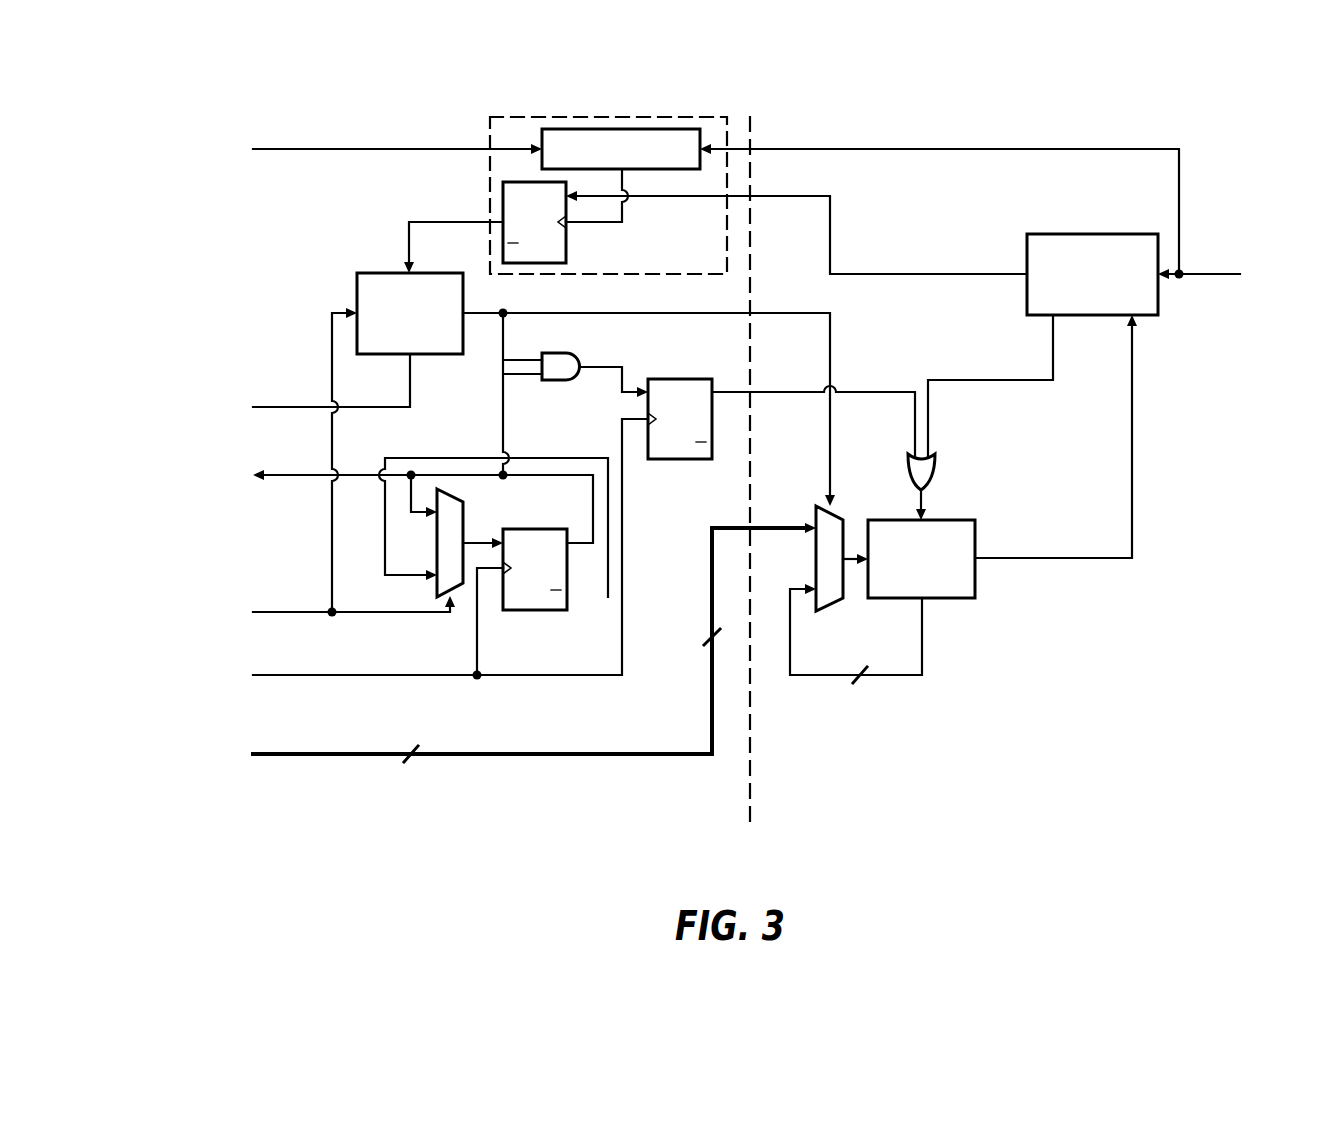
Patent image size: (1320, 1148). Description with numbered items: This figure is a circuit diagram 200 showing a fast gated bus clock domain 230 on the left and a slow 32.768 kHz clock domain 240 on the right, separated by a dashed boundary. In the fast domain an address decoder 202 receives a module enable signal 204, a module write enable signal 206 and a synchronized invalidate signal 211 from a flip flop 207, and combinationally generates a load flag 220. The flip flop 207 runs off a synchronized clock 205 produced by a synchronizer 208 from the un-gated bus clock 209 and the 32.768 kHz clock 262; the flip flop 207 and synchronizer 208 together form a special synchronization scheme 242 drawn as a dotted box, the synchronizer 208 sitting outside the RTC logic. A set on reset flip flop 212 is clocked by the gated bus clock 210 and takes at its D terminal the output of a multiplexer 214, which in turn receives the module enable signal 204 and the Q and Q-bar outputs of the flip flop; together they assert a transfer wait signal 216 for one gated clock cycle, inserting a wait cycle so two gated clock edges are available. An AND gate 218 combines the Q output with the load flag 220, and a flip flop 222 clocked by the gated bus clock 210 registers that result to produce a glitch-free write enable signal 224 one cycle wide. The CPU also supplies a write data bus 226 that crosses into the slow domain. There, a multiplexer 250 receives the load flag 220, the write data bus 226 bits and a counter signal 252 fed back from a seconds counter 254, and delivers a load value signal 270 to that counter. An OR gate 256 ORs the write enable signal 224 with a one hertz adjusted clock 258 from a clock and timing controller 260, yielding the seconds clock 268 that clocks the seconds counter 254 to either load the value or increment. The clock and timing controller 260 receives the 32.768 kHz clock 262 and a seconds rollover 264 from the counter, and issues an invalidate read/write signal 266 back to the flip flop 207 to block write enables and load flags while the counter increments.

The circuit diagram 200 is at (278, 864).
The address decoder 202 is at (384, 272).
The module enable signal 204 is at (332, 352).
The synchronized clock 205 is at (596, 224).
The module write enable signal 206 is at (298, 410).
The flip flop 207 is at (503, 200).
The synchronizer 208 is at (619, 128).
The un-gated bus clock 209 is at (388, 148).
The gated bus clock 210 is at (298, 677).
The synchronized invalidate signal 211 is at (448, 224).
The set on reset flip flop 212 is at (533, 612).
The multiplexer 214 is at (464, 514).
The transfer wait signal 216 is at (298, 478).
The AND gate 218 is at (560, 382).
The load flag 220 is at (792, 312).
The flip flop 222 is at (682, 378).
The write enable signal 224 is at (792, 391).
The write data bus 226 is at (298, 757).
The gated bus clock domain 230 is at (578, 826).
The 32.768 kHz clock domain 240 is at (917, 826).
The special synchronization scheme 242 is at (541, 117).
The multiplexer 250 is at (827, 612).
The counter signal 252 is at (898, 678).
The seconds counter 254 is at (950, 600).
The OR gate 256 is at (936, 470).
The 1 Hz clock 258 is at (948, 379).
The clock and timing controller 260 is at (1092, 233).
The 32.768 kHz clock 262 is at (961, 148).
The seconds rollover 264 is at (1134, 496).
The invalidate read/write signal 266 is at (792, 197).
The seconds clock 268 is at (918, 503).
The load value signal 270 is at (850, 566).